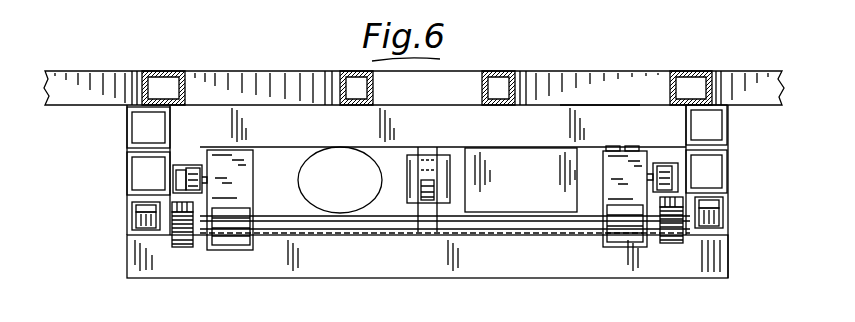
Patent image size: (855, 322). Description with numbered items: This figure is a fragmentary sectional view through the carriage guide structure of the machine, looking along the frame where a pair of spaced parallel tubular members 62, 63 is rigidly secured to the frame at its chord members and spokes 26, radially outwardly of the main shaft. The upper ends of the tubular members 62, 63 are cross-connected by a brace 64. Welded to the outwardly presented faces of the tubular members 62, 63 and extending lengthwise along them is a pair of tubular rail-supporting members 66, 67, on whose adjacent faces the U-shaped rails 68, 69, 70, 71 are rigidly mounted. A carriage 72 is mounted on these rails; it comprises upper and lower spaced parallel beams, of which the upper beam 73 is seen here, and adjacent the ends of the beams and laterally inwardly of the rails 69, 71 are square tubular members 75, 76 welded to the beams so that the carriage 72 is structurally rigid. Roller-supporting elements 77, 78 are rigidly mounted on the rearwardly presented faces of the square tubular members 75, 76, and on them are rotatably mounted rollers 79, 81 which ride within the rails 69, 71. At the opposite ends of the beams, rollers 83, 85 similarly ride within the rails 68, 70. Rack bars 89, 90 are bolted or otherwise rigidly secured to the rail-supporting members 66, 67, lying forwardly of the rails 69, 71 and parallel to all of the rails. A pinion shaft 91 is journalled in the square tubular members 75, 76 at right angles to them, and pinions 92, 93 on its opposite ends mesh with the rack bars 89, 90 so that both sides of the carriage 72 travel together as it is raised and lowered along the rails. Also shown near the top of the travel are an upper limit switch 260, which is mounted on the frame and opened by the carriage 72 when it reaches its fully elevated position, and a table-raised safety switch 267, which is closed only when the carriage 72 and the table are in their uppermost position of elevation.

The spokes 26 is at (482, 90).
The brace 64 is at (588, 103).
The tubular member 62 is at (728, 124).
The tubular member 63 is at (127, 131).
The rail-supporting member 66 is at (728, 171).
The rail-supporting member 67 is at (127, 178).
The U-shaped rail 68 is at (723, 206).
The U-shaped rail 69 is at (665, 163).
The U-shaped rail 70 is at (127, 210).
The U-shaped rail 71 is at (178, 165).
The carriage 72 is at (711, 280).
The upper beam 73 is at (398, 265).
The square tubular member 75 is at (603, 246).
The square tubular member 76 is at (253, 213).
The roller-supporting element 77 is at (600, 162).
The roller-supporting element 78 is at (235, 150).
The roller 79 is at (650, 177).
The roller 81 is at (191, 167).
The roller 83 is at (719, 221).
The roller 85 is at (140, 220).
The rack bar 89 is at (676, 201).
The rack bar 90 is at (198, 207).
The pinion shaft 91 is at (358, 226).
The pinion 92 is at (670, 245).
The pinion 93 is at (182, 247).
The upper limit switch 260 is at (632, 146).
The table-raised safety switch 267 is at (610, 146).